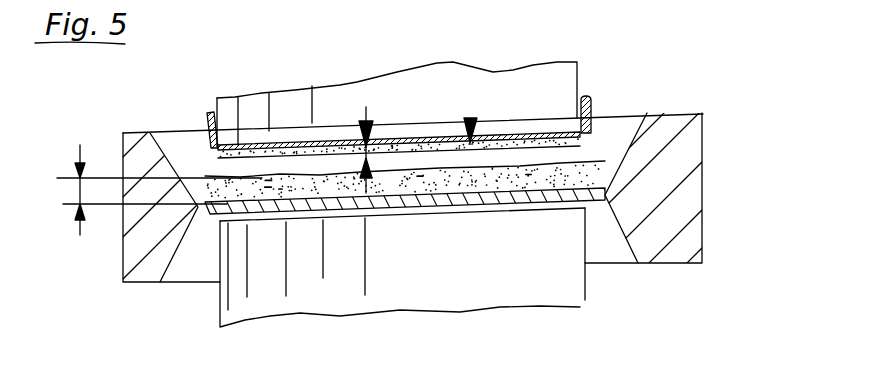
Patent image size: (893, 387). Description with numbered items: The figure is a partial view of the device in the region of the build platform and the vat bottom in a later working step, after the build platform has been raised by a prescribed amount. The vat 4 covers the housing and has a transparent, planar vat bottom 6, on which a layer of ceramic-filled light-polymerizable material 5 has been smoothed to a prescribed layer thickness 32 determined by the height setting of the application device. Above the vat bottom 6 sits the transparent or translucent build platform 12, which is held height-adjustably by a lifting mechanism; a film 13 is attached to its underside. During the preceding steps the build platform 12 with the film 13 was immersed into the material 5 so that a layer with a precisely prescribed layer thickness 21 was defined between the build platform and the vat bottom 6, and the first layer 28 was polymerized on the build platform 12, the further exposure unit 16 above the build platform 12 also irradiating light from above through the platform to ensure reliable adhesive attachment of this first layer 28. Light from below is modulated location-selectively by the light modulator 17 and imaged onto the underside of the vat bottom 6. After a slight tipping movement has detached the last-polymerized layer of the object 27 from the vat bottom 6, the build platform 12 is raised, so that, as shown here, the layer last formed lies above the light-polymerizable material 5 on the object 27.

The vat 4 is at (670, 130).
The light-polymerizable material 5 is at (600, 172).
The vat bottom 6 is at (220, 200).
The build platform 12 is at (555, 130).
The film 13 is at (582, 115).
The further exposure unit 16 is at (533, 88).
The light modulator 17 is at (553, 280).
The layer thickness 21 is at (366, 108).
The object 27 is at (470, 118).
The first layer 28 is at (420, 147).
The layer thickness 32 is at (82, 183).